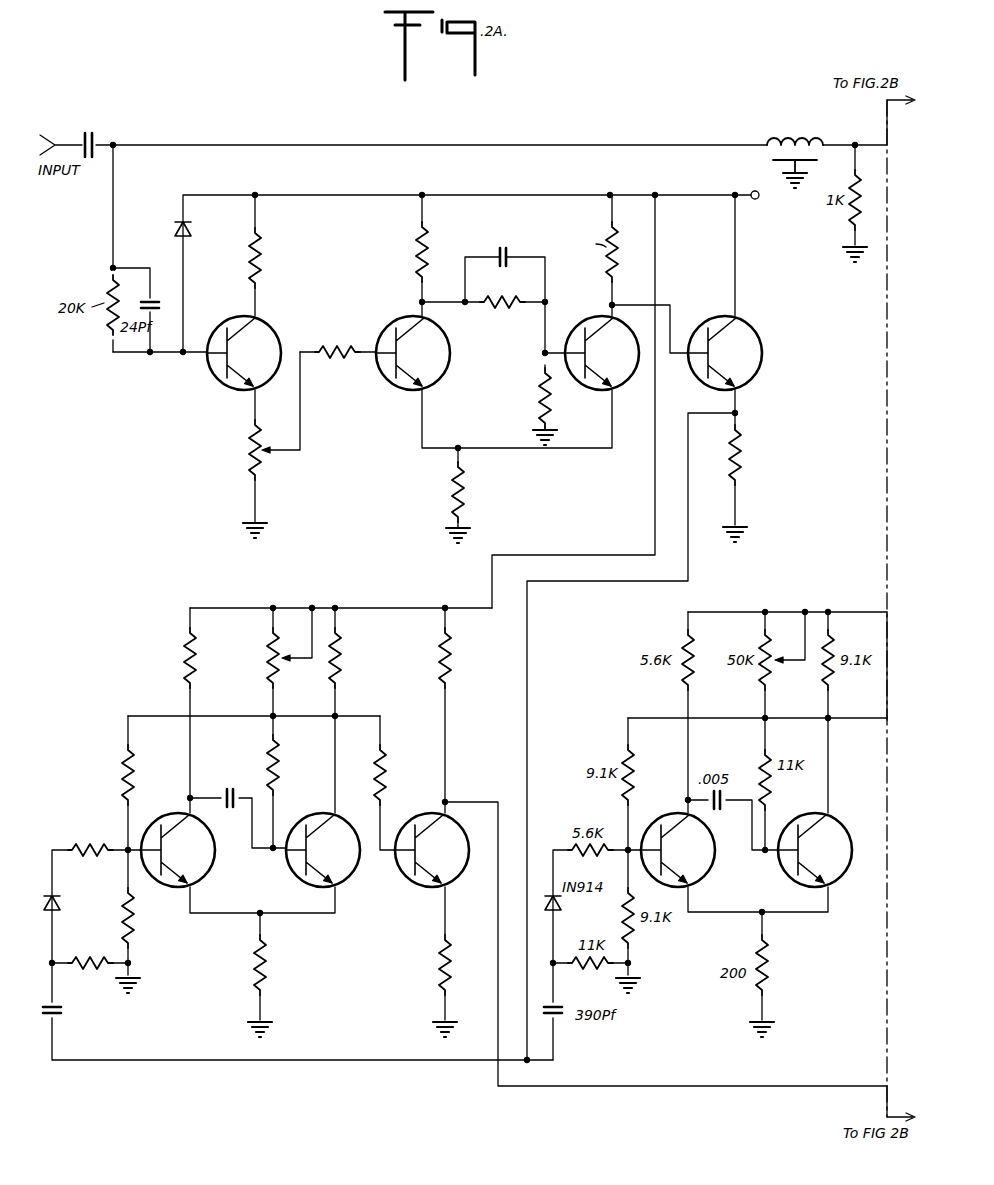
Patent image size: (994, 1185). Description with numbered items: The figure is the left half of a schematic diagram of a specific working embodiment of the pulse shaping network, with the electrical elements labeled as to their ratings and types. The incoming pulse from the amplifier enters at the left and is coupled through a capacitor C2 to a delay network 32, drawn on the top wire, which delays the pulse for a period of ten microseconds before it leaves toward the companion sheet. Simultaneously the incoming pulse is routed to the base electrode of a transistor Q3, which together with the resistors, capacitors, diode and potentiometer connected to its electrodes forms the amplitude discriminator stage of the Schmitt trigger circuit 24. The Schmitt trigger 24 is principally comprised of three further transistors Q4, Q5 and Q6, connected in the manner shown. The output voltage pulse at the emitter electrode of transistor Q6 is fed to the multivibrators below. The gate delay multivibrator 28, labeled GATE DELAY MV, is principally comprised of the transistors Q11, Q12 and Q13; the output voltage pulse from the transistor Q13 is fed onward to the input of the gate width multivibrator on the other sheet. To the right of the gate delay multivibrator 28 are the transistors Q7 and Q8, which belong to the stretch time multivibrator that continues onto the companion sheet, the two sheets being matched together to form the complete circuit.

The Schmitt trigger circuit 24 is at (467, 614).
The gate delay multivibrator 28 is at (465, 835).
The delay network 32 is at (788, 128).
The capacitor C2 is at (100, 126).
The transistor Q3 is at (225, 382).
The transistor Q4 is at (410, 392).
The transistor Q5 is at (590, 393).
The transistor Q6 is at (765, 356).
The transistor Q7 is at (708, 864).
The transistor Q8 is at (860, 872).
The transistor Q11 is at (212, 864).
The transistor Q12 is at (356, 876).
The transistor Q13 is at (470, 874).